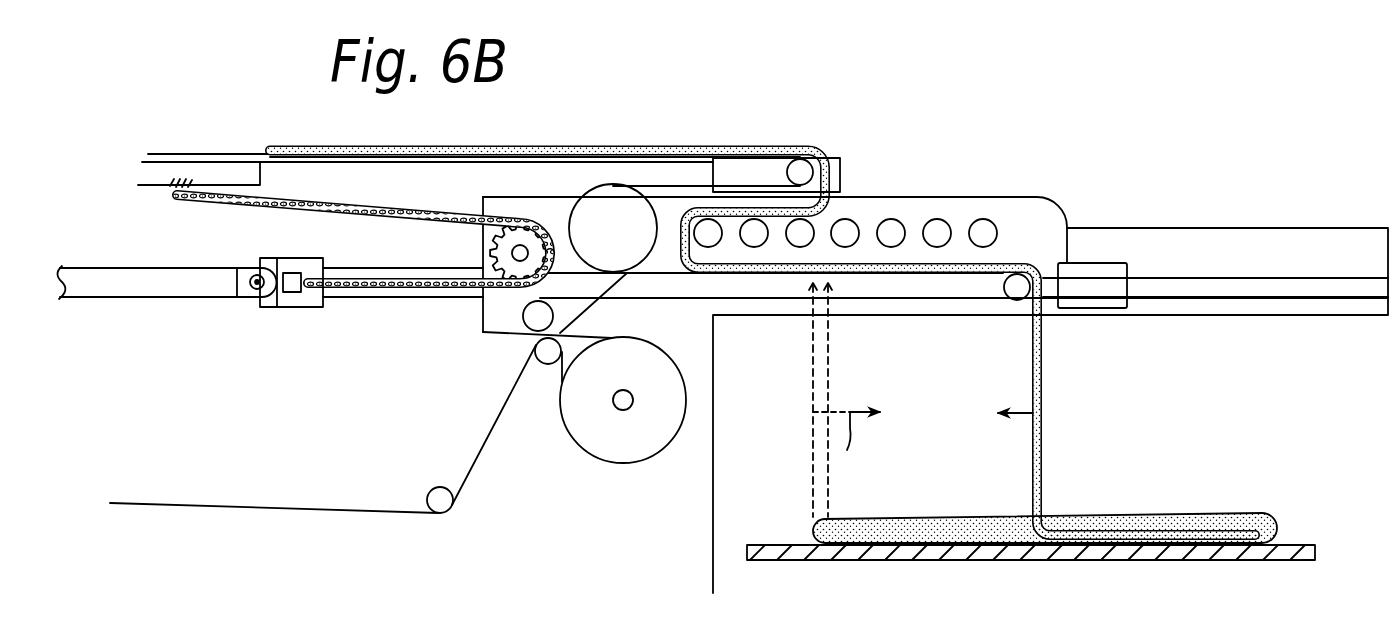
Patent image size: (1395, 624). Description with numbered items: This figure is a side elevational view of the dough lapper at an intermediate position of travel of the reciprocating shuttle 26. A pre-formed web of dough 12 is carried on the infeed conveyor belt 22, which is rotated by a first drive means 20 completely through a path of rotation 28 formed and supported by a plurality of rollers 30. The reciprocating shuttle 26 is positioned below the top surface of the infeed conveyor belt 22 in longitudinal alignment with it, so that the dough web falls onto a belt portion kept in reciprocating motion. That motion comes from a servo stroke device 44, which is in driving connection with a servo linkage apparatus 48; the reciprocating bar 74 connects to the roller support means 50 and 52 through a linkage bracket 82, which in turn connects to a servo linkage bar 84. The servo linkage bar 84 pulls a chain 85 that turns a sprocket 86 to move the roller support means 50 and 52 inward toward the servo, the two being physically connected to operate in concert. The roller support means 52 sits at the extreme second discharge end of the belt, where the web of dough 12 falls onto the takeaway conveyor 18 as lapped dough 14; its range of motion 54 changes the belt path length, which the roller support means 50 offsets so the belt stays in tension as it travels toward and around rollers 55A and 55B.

The web of dough 12 is at (1047, 445).
The lapped dough 14 is at (1103, 520).
The takeaway conveyor 18 is at (890, 557).
The first drive means 20 is at (594, 468).
The infeed conveyor belt 22 is at (190, 153).
The reciprocating shuttle 26 is at (1043, 187).
The path of rotation 28 is at (452, 176).
The rollers 30 is at (807, 170).
The servo stroke device 44 is at (98, 312).
The servo linkage apparatus 48 is at (327, 312).
The roller support means 50 is at (877, 207).
The roller support means 52 is at (923, 290).
The range of motion 54 is at (1017, 417).
The roller 55A is at (610, 228).
The roller 55B is at (1017, 292).
The reciprocating bar 74 is at (133, 278).
The linkage bracket 82 is at (263, 305).
The servo linkage bar 84 is at (407, 267).
The chain 85 is at (278, 212).
The sprocket 86 is at (527, 237).